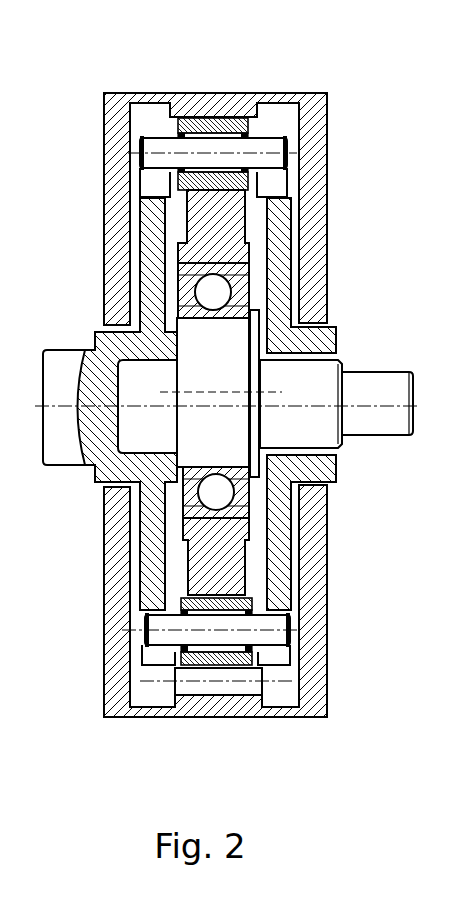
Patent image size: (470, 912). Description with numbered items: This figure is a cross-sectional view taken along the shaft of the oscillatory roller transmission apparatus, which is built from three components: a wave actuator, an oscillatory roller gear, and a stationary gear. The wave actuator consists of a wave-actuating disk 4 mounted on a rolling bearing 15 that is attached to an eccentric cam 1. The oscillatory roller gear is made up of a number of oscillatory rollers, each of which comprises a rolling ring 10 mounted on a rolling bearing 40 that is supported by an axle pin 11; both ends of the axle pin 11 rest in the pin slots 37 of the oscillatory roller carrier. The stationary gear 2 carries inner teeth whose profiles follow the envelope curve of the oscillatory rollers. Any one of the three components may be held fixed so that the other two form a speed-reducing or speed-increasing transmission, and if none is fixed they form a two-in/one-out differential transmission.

The eccentric cam 1 is at (212, 355).
The stationary gear 2 is at (253, 675).
The wave-actuating disk 4 is at (304, 111).
The rolling ring 10 is at (245, 96).
The axle pin 11 is at (163, 148).
The rolling bearing 15 is at (282, 140).
The pin slots 37 is at (131, 152).
The rolling bearing 40 is at (191, 118).